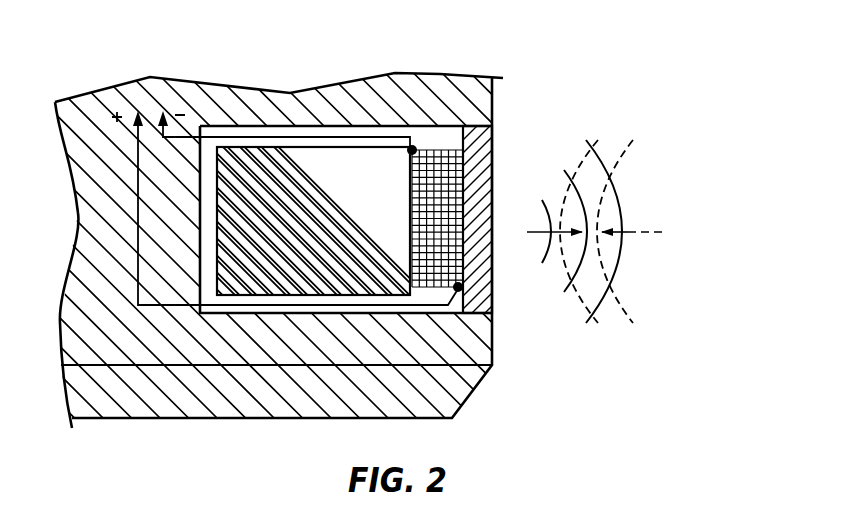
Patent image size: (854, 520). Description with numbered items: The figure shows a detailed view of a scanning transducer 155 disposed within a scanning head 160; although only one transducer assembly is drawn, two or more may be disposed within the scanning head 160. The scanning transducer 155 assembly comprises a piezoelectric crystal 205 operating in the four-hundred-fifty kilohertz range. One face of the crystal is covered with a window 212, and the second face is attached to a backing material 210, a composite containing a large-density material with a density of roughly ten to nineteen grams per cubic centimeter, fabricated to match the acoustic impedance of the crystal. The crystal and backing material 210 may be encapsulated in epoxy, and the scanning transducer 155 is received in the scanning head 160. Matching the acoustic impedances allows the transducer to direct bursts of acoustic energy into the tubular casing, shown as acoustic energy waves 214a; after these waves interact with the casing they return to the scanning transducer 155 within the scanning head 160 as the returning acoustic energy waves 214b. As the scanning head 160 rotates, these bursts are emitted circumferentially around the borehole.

The scanning transducer 155 is at (441, 115).
The scanning head 160 is at (480, 352).
The piezoelectric crystal 205 is at (450, 163).
The backing material 210 is at (326, 155).
The window 212 is at (487, 187).
The acoustic energy waves 214a is at (532, 232).
The acoustic energy waves 214b is at (643, 231).